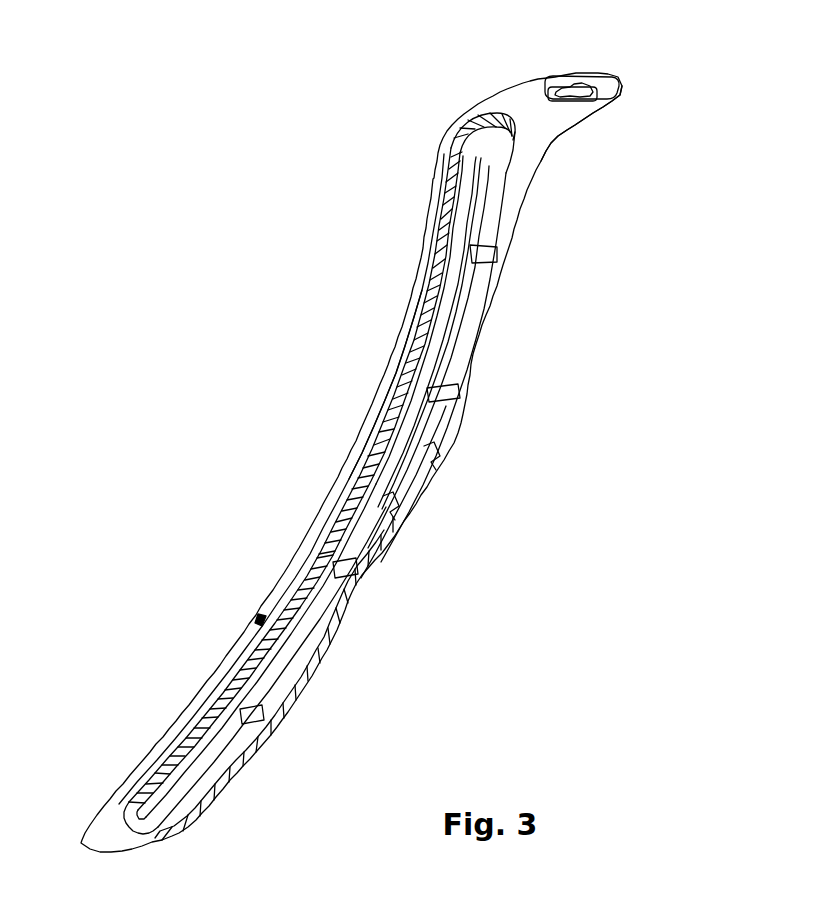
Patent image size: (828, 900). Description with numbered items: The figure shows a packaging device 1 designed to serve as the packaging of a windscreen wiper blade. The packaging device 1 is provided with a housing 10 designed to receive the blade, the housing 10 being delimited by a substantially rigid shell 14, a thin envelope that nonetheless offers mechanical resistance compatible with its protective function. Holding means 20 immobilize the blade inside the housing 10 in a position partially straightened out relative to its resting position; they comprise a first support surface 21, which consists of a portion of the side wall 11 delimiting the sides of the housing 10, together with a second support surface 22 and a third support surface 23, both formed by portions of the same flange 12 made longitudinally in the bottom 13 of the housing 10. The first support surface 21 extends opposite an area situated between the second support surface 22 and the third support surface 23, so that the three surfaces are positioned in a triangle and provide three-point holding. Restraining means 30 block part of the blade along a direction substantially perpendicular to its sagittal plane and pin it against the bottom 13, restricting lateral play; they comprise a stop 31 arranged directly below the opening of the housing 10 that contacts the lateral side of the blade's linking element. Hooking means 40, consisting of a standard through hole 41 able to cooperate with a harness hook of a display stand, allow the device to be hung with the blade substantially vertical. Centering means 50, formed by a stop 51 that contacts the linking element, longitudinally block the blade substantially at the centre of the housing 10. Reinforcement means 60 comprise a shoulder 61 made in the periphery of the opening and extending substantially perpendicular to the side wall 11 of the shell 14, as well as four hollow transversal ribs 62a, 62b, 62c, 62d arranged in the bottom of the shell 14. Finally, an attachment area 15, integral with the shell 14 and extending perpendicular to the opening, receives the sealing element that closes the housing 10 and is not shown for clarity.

The packaging device 1 is at (407, 635).
The housing 10 is at (200, 705).
The wall 11 is at (423, 427).
The flange 12 is at (470, 280).
The bottom 13 is at (493, 210).
The shell 14 is at (203, 800).
The attachment area 15 is at (538, 134).
The holding means 20 is at (457, 130).
The first support surface 21 is at (378, 473).
The second support surface 22 is at (497, 170).
The third support surface 23 is at (210, 752).
The restraining means 30 is at (373, 423).
The stop 31 is at (430, 457).
The hooking means 40 is at (620, 83).
The through hole 41 is at (548, 80).
The centering means 50 is at (333, 521).
The stop 51 is at (388, 508).
The reinforcement means 60 is at (262, 613).
The shoulder 61 is at (407, 357).
The rib 62a is at (480, 253).
The rib 62b is at (445, 372).
The rib 62c is at (352, 558).
The rib 62d is at (250, 698).